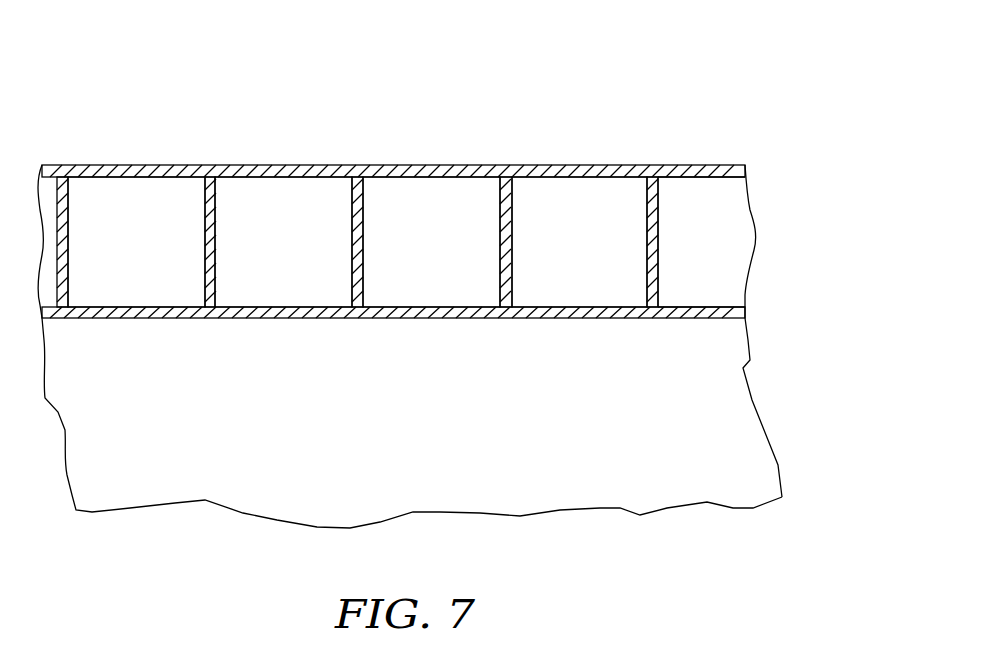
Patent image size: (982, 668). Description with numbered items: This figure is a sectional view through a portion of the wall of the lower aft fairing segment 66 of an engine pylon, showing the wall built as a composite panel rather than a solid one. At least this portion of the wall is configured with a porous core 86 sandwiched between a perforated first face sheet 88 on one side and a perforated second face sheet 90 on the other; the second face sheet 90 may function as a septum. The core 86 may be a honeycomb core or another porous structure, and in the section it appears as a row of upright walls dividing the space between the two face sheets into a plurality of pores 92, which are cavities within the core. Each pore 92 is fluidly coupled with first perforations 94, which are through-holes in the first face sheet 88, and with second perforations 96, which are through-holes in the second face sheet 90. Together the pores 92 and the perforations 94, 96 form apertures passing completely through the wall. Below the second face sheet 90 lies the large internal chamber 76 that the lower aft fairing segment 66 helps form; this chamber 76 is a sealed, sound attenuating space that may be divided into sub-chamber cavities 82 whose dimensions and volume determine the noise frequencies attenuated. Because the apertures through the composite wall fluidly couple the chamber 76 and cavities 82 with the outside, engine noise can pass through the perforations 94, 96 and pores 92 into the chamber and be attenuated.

The lower aft fairing segment 66 is at (437, 207).
The internal chamber 76 is at (412, 423).
The cavities 82 is at (362, 448).
The porous core 86 is at (734, 234).
The first face sheet 88 is at (439, 135).
The second face sheet 90 is at (439, 337).
The pores 92 is at (114, 265).
The first perforations 94 is at (175, 167).
The second perforations 96 is at (172, 320).